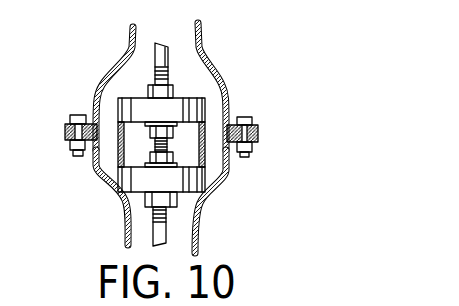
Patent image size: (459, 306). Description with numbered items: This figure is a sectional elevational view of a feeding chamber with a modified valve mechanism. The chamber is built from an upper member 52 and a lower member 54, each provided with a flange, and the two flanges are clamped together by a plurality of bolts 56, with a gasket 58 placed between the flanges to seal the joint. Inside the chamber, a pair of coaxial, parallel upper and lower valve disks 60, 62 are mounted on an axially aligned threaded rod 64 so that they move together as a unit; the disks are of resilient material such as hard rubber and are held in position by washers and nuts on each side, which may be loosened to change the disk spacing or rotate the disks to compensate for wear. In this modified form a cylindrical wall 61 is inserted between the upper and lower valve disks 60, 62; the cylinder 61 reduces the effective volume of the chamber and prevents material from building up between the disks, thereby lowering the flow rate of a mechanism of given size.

The upper member 52 is at (110, 80).
The lower member 54 is at (98, 178).
The bolts 56 is at (255, 117).
The gasket 58 is at (259, 133).
The upper valve disk 60 is at (198, 108).
The cylindrical wall 61 is at (118, 152).
The lower valve disk 62 is at (186, 180).
The threaded rod 64 is at (168, 56).